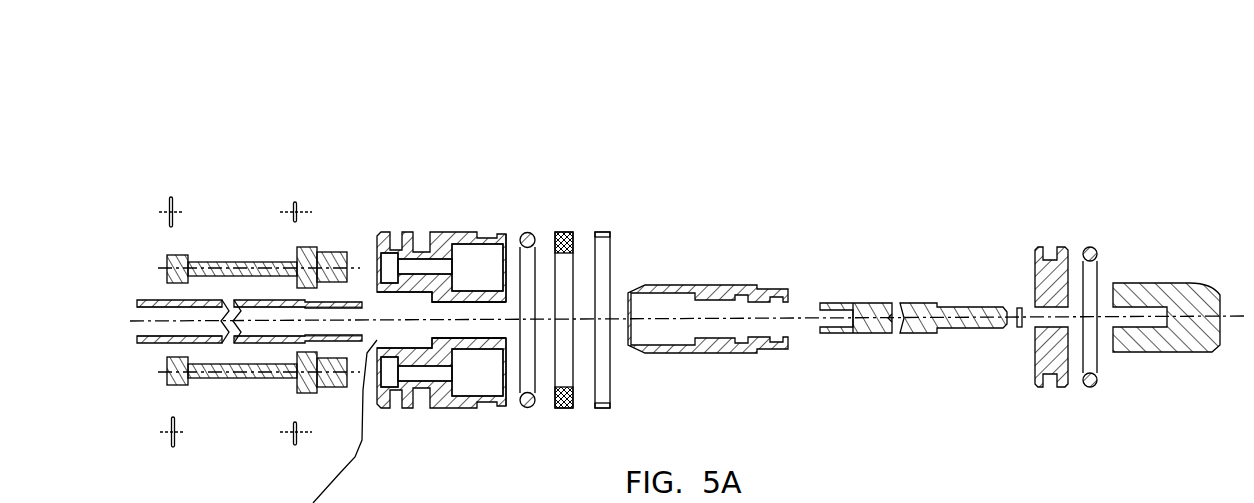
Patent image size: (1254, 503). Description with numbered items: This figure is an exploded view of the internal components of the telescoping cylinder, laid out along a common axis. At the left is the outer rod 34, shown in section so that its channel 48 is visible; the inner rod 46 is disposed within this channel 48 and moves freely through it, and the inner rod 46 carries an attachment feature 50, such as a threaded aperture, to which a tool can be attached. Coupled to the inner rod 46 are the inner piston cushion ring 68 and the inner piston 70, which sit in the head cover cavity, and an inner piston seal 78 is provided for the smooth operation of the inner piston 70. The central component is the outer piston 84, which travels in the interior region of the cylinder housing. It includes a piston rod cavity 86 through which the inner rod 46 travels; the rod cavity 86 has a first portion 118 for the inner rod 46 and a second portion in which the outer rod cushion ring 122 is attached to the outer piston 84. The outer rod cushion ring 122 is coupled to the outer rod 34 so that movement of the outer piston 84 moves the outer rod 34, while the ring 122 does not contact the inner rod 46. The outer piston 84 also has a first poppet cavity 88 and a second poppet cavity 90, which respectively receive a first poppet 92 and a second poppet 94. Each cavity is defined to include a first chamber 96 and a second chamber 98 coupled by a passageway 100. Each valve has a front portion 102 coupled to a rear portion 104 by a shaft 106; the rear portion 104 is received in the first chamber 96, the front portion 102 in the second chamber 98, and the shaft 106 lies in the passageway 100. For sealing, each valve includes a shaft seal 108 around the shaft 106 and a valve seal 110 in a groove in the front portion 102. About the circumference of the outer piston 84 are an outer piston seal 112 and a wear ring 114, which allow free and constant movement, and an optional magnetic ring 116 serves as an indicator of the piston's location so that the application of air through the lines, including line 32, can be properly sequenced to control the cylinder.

The line 32 is at (950, 480).
The outer rod 34 is at (145, 303).
The inner rod 46 is at (875, 305).
The channel 48 is at (140, 328).
The attachment feature 50 is at (850, 315).
The inner piston cushion ring 68 is at (1177, 287).
The inner piston 70 is at (1038, 247).
The inner piston seal 78 is at (1091, 250).
The outer piston 84 is at (440, 235).
The piston rod cavity 86 is at (489, 329).
The first poppet cavity 88 is at (475, 258).
The second poppet cavity 90 is at (485, 383).
The first poppet 92 is at (336, 256).
The second poppet 94 is at (332, 393).
The first chamber 96 is at (390, 265).
The second chamber 98 is at (488, 270).
The passageway 100 is at (417, 270).
The front portion 102 is at (180, 258).
The rear portion 104 is at (313, 253).
The shaft 106 is at (252, 263).
The shaft seal 108 is at (293, 203).
The valve seal 110 is at (170, 197).
The outer piston seal 112 is at (528, 233).
The wear ring 114 is at (605, 232).
The magnetic ring 116 is at (568, 230).
The first portion 118 is at (450, 313).
The outer rod cushion ring 122 is at (686, 295).